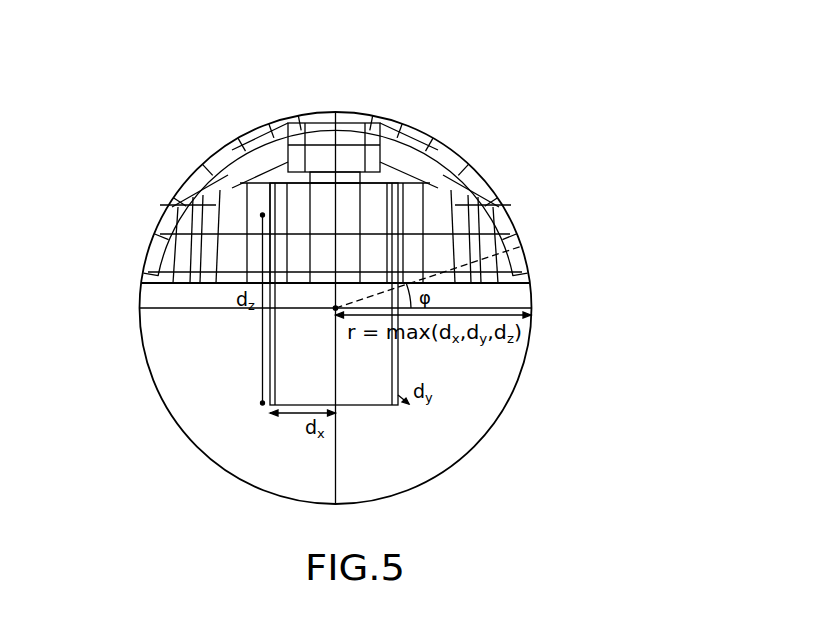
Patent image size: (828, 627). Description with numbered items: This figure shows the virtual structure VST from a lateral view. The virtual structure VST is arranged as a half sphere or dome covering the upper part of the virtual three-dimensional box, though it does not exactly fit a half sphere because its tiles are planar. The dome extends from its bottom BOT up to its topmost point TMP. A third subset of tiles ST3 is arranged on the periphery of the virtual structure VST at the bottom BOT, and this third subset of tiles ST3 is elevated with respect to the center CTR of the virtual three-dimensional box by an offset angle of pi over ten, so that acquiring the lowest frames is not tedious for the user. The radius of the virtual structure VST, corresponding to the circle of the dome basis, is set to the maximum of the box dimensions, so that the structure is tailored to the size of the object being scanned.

The virtual structure VST is at (485, 172).
The third subset of tiles ST3 is at (530, 266).
The topmost point TMP is at (340, 113).
The bottom BOT is at (142, 284).
The center CTR is at (306, 324).